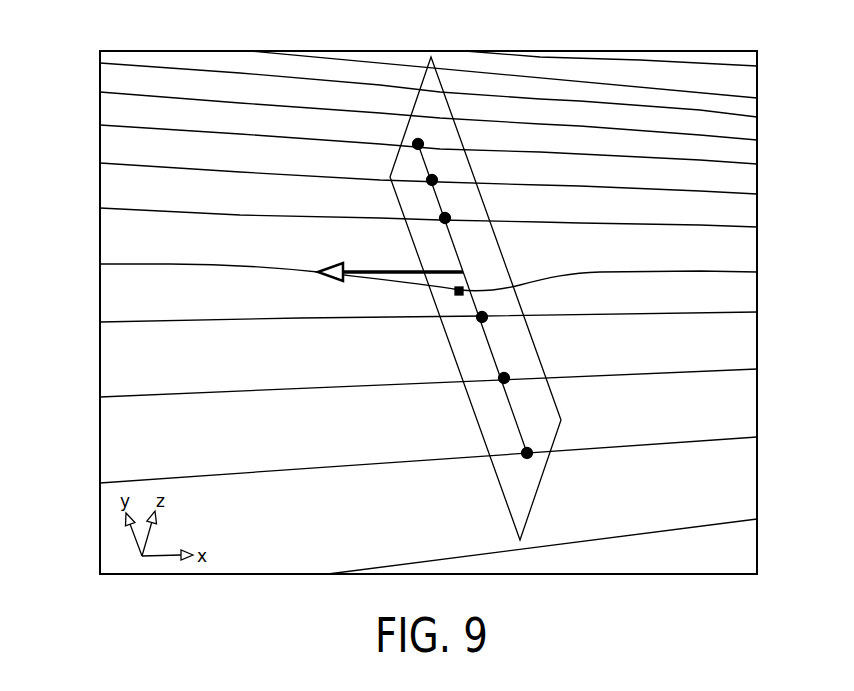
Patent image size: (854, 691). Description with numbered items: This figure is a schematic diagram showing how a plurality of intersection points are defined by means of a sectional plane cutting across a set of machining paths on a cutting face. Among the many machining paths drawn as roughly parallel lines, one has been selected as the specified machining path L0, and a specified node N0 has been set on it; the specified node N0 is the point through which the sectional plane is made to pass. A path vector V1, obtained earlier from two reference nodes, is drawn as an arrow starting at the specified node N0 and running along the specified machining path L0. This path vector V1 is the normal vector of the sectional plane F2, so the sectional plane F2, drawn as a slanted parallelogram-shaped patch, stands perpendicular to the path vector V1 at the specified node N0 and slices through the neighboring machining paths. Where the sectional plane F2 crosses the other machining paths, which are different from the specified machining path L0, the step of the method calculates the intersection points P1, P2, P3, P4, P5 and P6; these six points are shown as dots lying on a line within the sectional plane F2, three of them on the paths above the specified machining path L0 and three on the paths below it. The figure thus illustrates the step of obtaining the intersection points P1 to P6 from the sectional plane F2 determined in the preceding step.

The sectional plane F2 is at (458, 133).
The intersection point P1 is at (457, 208).
The intersection point P2 is at (495, 306).
The intersection point P3 is at (445, 170).
The intersection point P4 is at (516, 367).
The intersection point P5 is at (432, 135).
The intersection point P6 is at (537, 439).
The specified node N0 is at (455, 292).
The path vector V1 is at (388, 270).
The specified machining path L0 is at (170, 264).